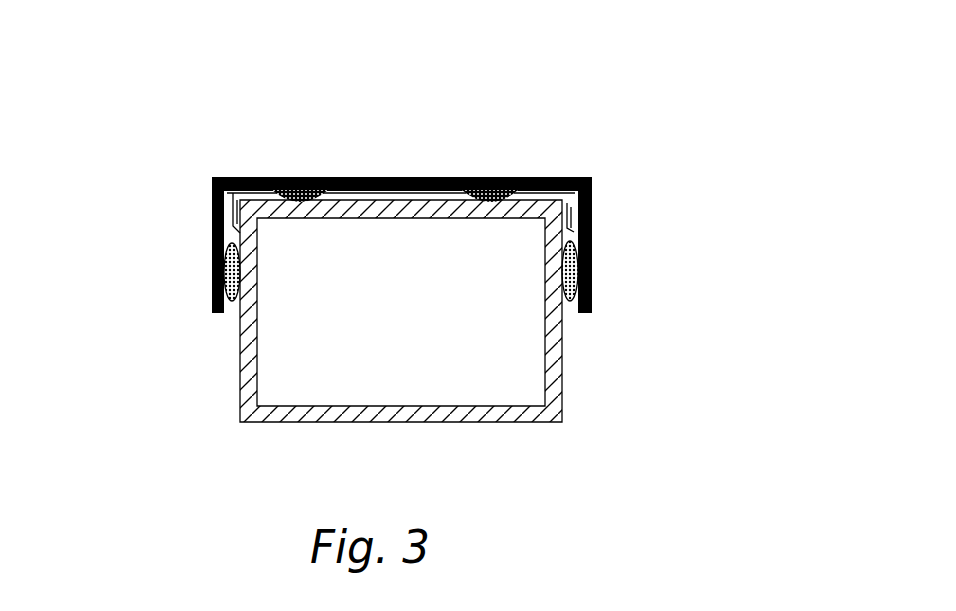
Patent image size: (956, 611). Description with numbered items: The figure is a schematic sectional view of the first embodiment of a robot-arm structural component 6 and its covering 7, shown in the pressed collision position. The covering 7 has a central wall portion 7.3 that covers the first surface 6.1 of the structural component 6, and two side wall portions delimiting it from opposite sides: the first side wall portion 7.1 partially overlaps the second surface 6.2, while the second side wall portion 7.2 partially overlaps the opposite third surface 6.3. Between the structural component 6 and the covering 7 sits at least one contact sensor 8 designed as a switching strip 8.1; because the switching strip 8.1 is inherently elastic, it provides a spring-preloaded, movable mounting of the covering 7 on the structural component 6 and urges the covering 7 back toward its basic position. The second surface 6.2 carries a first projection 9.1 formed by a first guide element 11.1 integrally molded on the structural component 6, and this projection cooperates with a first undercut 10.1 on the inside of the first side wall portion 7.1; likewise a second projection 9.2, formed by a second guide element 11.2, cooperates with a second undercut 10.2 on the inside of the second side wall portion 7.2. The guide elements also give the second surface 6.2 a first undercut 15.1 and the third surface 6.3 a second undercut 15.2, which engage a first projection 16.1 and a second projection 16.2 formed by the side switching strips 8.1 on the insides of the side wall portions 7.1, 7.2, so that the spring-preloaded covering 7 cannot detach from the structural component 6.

The structural component 6 is at (415, 310).
The first surface 6.1 is at (520, 201).
The second surface 6.2 is at (240, 360).
The third surface 6.3 is at (560, 360).
The covering 7 is at (386, 174).
The first side wall portion 7.1 is at (211, 252).
The second side wall portion 7.2 is at (591, 224).
The central wall portion 7.3 is at (441, 170).
The contact sensor 8 is at (416, 234).
The switching strip 8.1 is at (299, 178).
The first projection 9.1 is at (202, 97).
The second projection 9.2 is at (714, 181).
The first undercut 10.1 is at (212, 222).
The second undercut 10.2 is at (591, 250).
The first guide element 11.1 is at (218, 178).
The second guide element 11.2 is at (591, 208).
The first undercut 15.1 is at (238, 242).
The second undercut 15.2 is at (563, 240).
The first projection 16.1 is at (226, 317).
The second projection 16.2 is at (574, 313).